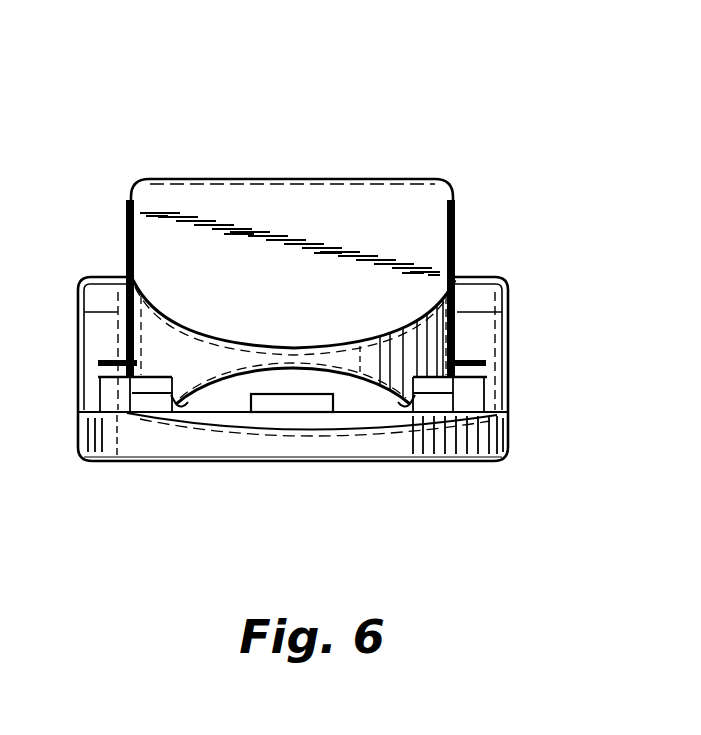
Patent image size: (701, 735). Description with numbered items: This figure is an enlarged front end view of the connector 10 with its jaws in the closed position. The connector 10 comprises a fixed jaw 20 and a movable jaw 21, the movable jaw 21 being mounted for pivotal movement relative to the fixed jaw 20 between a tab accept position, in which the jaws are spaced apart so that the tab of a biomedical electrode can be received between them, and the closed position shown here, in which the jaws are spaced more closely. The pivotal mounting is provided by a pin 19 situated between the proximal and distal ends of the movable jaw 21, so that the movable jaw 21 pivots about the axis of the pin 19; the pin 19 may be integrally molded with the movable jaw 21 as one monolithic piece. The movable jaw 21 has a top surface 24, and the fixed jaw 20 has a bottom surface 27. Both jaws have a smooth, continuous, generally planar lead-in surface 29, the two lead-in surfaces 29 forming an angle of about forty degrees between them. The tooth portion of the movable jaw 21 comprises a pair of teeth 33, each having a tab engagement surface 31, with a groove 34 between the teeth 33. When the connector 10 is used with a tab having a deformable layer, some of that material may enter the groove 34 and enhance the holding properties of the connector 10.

The connector 10 is at (405, 97).
The pin 19 is at (110, 378).
The fixed jaw 20 is at (152, 462).
The movable jaw 21 is at (197, 198).
The top surface 24 is at (317, 192).
The bottom surface 27 is at (433, 461).
The lead-in surface 29 is at (213, 398).
The tab engagement surface 31 is at (195, 407).
The teeth 33 is at (343, 398).
The groove 34 is at (285, 398).